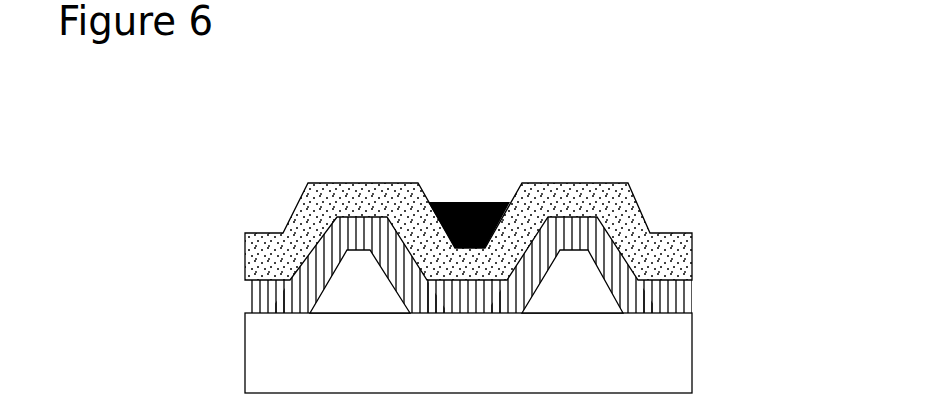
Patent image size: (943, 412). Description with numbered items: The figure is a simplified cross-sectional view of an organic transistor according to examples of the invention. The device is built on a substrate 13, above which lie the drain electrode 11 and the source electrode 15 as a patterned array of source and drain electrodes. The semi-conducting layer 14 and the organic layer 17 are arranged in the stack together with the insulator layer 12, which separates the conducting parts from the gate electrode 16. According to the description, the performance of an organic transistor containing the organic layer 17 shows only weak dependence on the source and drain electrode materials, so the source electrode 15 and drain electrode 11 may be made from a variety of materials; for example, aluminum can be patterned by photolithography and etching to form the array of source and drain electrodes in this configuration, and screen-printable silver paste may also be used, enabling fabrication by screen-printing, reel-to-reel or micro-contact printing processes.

The drain electrode 11 is at (573, 297).
The insulator layer 12 is at (653, 247).
The substrate 13 is at (653, 360).
The semi-conducting layer 14 is at (335, 248).
The source electrode 15 is at (362, 297).
The gate electrode 16 is at (467, 215).
The organic layer 17 is at (365, 262).